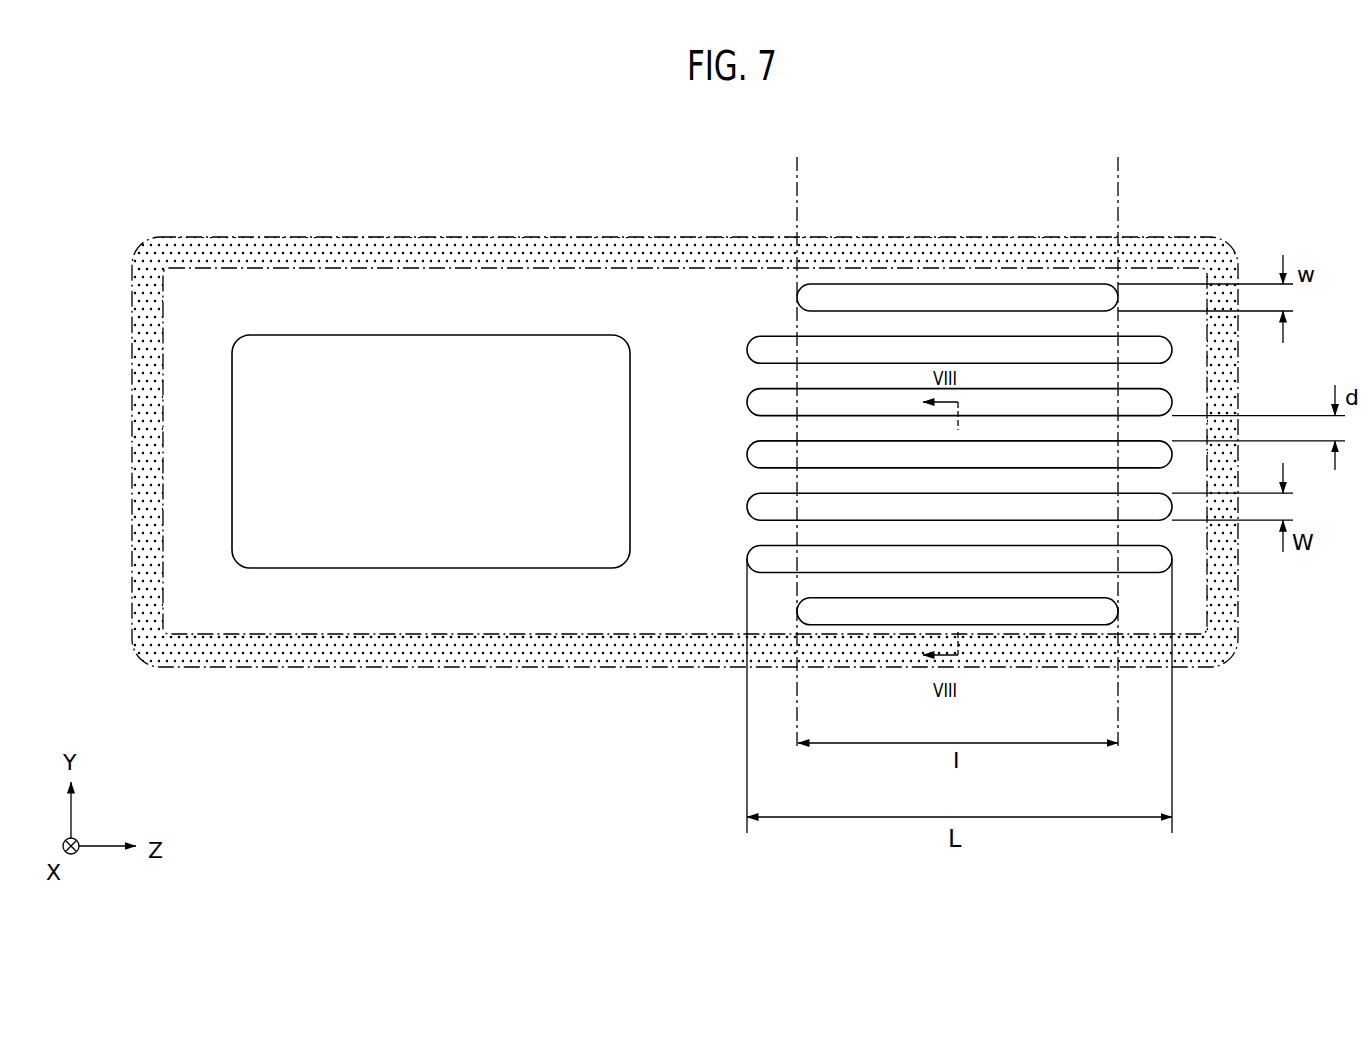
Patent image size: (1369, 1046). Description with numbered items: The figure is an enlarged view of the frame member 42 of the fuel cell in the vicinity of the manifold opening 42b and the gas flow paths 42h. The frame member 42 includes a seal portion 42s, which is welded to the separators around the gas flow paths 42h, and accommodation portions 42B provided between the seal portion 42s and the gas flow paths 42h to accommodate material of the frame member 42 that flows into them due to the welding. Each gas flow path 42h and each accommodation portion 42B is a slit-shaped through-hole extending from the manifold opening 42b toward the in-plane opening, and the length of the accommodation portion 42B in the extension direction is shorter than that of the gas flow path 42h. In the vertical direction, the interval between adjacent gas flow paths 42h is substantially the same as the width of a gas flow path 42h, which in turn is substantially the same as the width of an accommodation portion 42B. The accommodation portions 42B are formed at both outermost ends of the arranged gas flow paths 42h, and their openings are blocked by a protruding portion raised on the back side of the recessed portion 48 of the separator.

The frame member 42 is at (342, 303).
The manifold opening 42b is at (481, 347).
The accommodation portion 42B is at (797, 297).
The seal portion 42s is at (958, 255).
The gas flow path 42h is at (748, 505).
The recessed portion 48 is at (1118, 180).